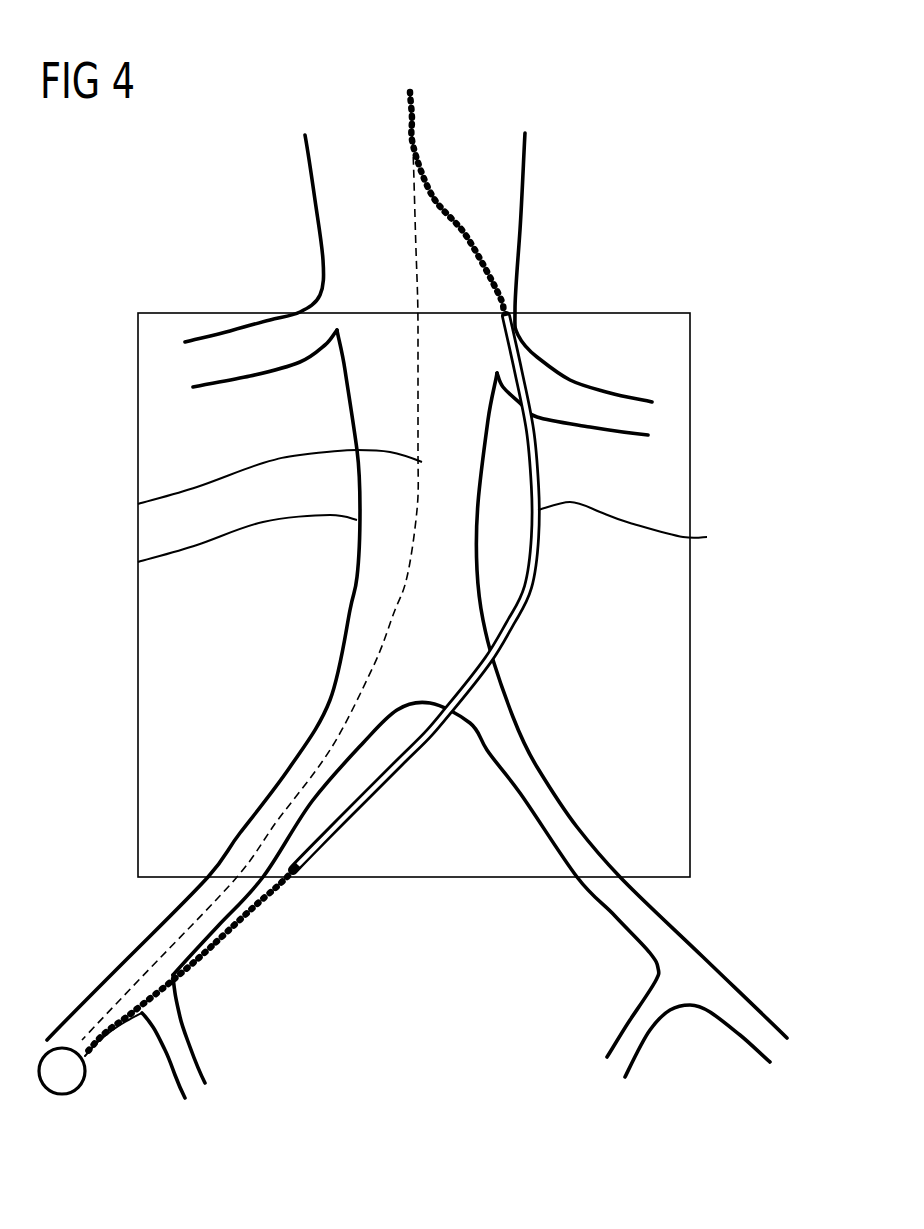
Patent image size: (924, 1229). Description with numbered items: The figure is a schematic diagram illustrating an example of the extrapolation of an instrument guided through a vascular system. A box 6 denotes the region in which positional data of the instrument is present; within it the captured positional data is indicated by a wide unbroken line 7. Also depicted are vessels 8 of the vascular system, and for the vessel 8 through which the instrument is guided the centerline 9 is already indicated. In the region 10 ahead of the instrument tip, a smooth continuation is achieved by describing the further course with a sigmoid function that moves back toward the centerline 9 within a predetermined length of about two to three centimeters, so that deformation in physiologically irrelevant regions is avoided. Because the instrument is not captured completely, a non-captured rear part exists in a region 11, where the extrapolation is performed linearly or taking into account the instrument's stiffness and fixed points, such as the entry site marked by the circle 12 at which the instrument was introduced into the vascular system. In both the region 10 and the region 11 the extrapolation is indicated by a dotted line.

The box 6 is at (690, 467).
The wide unbroken line 7 is at (690, 537).
The vessels 8 is at (138, 562).
The centerline 9 is at (138, 504).
The region ahead of the instrument tip 10 is at (461, 210).
The region 11 is at (212, 969).
The target region 12 is at (63, 1080).